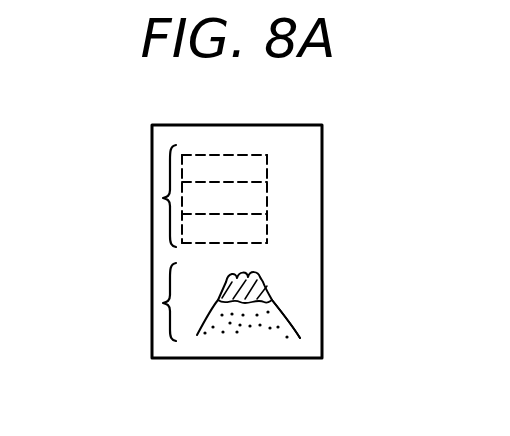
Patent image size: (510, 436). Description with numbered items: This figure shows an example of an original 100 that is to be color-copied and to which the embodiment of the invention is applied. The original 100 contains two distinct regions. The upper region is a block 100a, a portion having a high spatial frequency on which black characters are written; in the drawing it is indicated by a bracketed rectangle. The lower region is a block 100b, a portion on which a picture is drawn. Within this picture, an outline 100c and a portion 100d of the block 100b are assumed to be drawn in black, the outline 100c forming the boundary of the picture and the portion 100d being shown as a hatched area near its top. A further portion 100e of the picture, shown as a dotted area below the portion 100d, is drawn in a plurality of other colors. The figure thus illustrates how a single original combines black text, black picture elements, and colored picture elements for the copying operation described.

The original 100 is at (328, 184).
The block 100a is at (163, 198).
The block 100b is at (163, 303).
The outline 100c is at (292, 328).
The portion 100d is at (268, 294).
The portion 100e is at (250, 334).